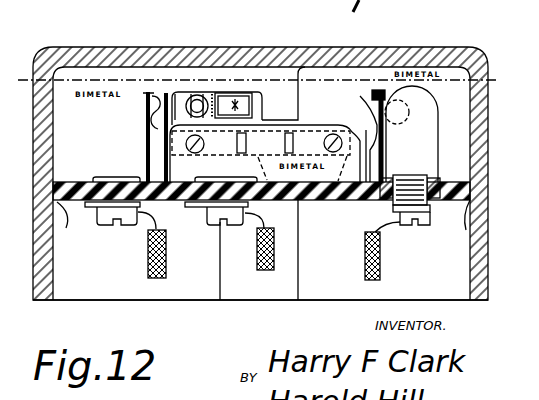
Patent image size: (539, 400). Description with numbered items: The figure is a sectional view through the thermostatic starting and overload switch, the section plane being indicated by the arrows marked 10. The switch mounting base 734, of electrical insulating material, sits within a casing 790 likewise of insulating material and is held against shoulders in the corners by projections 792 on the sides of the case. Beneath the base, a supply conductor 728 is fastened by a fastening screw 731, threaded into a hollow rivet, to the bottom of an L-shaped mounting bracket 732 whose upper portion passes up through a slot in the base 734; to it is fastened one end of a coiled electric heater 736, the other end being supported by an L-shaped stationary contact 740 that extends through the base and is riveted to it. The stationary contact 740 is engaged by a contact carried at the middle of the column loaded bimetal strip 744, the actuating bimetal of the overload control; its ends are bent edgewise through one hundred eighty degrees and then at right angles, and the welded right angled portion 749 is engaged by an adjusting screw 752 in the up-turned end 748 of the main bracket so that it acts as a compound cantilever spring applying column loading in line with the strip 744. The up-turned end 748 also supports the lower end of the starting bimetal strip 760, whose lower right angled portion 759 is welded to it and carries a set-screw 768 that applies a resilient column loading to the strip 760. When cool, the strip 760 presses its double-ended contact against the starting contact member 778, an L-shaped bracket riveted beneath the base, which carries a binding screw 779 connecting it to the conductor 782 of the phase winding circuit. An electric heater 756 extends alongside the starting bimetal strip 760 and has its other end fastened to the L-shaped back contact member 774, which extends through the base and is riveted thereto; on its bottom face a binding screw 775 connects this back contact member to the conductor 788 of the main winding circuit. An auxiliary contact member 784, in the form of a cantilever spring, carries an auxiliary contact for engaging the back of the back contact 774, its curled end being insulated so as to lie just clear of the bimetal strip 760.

The section line 10 is at (501, 96).
The casing 790 is at (128, 53).
The back contact member 774 is at (192, 98).
The electric heater 756 is at (203, 97).
The auxiliary contact member 784 is at (223, 100).
The stationary contact 740 is at (382, 92).
The column loaded bimetal strip 744 is at (372, 112).
The up-turned end 748 is at (261, 126).
The adjusting screw 752 is at (342, 101).
The L-shaped mounting bracket 732 is at (424, 110).
The coiled electric heater 736 is at (398, 125).
The starting bimetal strip 760 is at (150, 116).
The starting contact member 778 is at (151, 156).
The set-screw 768 is at (196, 154).
The switch mounting base 734 is at (58, 206).
The binding screw 779 is at (114, 228).
The binding screw 775 is at (212, 226).
The lower right angled portion 759 is at (258, 199).
The conductor 782 is at (158, 277).
The conductor 788 is at (266, 271).
The right angled portion 749 is at (322, 204).
The fastening screw 731 is at (430, 228).
The projections 792 is at (464, 206).
The supply conductor 728 is at (382, 278).